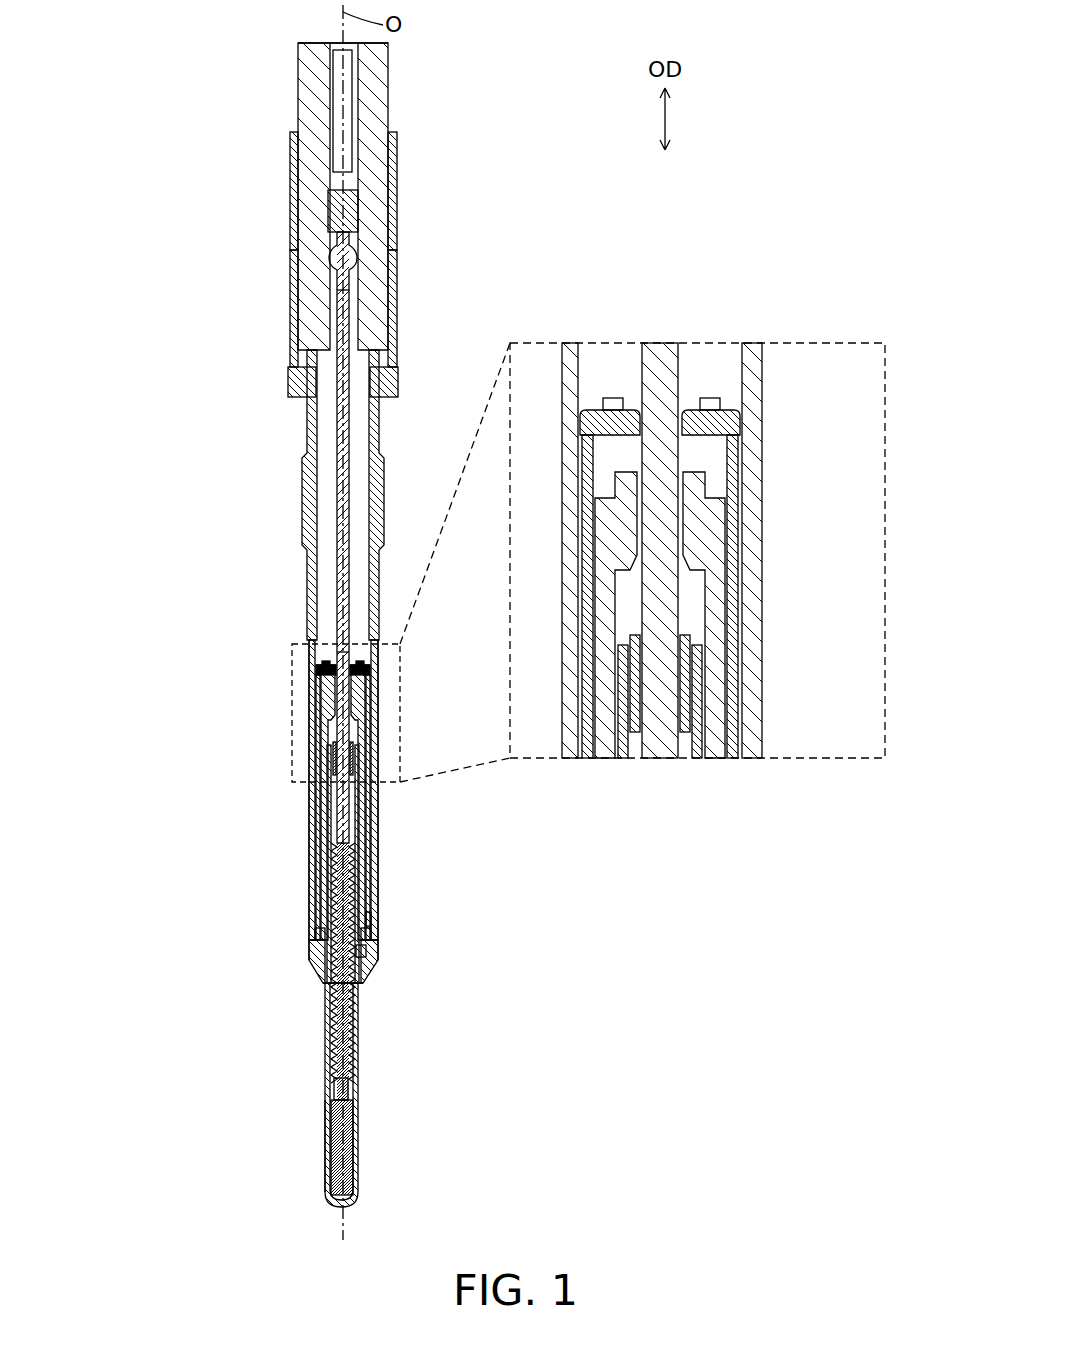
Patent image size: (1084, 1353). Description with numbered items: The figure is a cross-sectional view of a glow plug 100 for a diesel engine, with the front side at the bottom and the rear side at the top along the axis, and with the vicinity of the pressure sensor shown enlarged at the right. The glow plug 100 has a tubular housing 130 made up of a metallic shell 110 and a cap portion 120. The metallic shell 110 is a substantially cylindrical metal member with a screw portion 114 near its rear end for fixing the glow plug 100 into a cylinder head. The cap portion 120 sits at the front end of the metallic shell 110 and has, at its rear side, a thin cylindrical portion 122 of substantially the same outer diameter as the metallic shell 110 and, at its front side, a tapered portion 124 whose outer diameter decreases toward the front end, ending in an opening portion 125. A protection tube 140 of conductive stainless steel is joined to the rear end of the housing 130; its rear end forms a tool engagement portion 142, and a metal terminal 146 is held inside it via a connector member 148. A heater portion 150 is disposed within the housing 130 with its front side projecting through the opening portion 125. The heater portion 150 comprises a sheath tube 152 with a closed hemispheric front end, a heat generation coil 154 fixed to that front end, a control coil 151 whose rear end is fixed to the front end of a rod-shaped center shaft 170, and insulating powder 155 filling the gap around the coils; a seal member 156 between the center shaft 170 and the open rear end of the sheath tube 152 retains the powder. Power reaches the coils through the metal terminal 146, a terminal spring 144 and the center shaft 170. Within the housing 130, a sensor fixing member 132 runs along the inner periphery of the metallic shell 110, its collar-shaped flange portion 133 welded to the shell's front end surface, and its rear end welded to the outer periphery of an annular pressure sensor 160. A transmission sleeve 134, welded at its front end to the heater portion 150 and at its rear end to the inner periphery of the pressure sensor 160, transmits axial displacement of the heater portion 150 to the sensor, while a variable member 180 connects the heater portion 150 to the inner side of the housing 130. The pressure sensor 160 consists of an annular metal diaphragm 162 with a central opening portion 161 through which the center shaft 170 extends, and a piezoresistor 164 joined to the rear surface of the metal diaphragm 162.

The glow plug 100 is at (485, 69).
The metallic shell 110 is at (308, 845).
The screw portion 114 is at (305, 490).
The cap portion 120 is at (232, 943).
The cylindrical portion 122 is at (315, 945).
The tapered portion 124 is at (312, 975).
The opening portion 125 is at (360, 1000).
The tubular housing 130 is at (160, 832).
The sensor fixing member 132 is at (318, 700).
The flange portion 133 is at (370, 918).
The transmission sleeve 134 is at (365, 700).
The protection tube 140 is at (300, 297).
The tool engagement portion 142 is at (300, 185).
The terminal spring 144 is at (350, 268).
The metal terminal 146 is at (365, 192).
The connector member 148 is at (310, 88).
The heater portion 150 is at (228, 1010).
The control coil 151 is at (333, 1058).
The sheath tube 152 is at (330, 1030).
The heat generation coil 154 is at (333, 1115).
The insulating powder 155 is at (333, 1088).
The seal member 156 is at (355, 742).
The pressure sensor 160 is at (232, 615).
The opening portion 161 is at (345, 641).
The metal diaphragm 162 is at (318, 670).
The piezoresistor 164 is at (322, 662).
The center shaft 170 is at (343, 572).
The variable member 180 is at (365, 952).